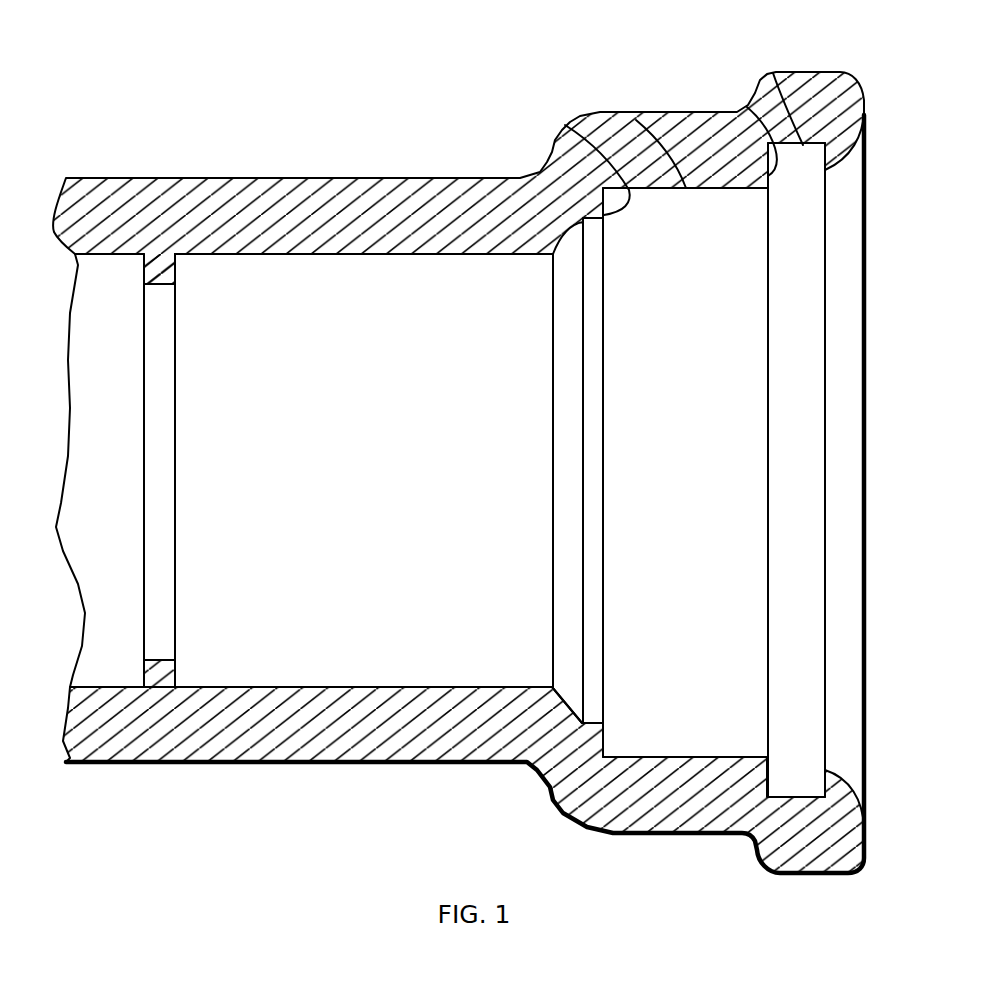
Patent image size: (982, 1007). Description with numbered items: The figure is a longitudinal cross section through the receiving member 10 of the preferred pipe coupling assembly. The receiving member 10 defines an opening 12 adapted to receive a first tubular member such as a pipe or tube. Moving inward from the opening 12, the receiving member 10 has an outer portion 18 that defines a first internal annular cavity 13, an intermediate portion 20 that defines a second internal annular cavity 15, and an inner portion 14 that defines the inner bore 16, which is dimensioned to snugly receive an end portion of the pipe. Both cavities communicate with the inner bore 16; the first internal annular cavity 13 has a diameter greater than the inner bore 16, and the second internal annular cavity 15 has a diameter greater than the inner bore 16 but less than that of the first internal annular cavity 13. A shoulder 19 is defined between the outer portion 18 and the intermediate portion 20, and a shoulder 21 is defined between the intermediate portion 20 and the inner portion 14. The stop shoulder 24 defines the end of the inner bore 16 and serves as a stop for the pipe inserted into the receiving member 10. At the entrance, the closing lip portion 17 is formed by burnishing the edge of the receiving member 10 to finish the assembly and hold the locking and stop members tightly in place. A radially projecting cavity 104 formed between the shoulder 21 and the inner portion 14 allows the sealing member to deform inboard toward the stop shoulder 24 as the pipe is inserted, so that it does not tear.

The receiving member 10 is at (363, 178).
The opening 12 is at (848, 243).
The first internal annular cavity 13 is at (784, 413).
The inner portion 14 is at (358, 255).
The second internal annular cavity 15 is at (690, 438).
The inner bore 16 is at (386, 406).
The closing lip portion 17 is at (828, 172).
The outer portion 18 is at (773, 73).
The shoulder 19 is at (747, 107).
The intermediate portion 20 is at (636, 120).
The shoulder 21 is at (565, 125).
The stop shoulder 24 is at (165, 285).
The radially projecting cavity 104 is at (564, 240).